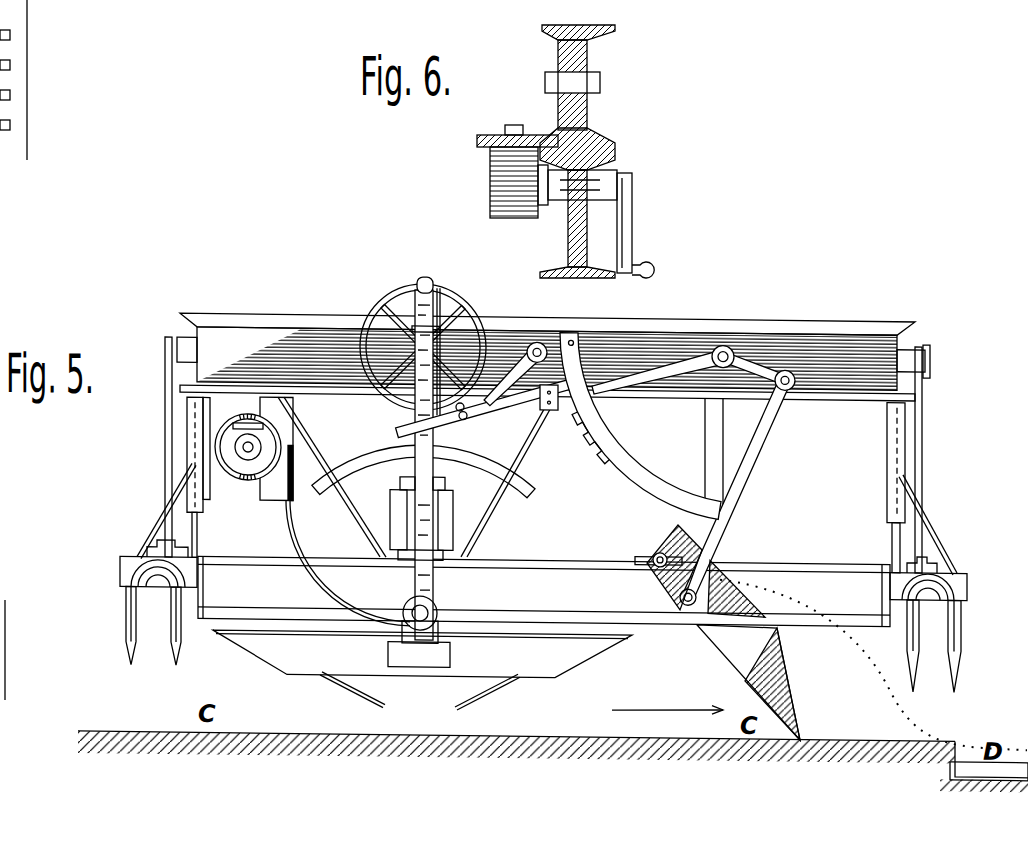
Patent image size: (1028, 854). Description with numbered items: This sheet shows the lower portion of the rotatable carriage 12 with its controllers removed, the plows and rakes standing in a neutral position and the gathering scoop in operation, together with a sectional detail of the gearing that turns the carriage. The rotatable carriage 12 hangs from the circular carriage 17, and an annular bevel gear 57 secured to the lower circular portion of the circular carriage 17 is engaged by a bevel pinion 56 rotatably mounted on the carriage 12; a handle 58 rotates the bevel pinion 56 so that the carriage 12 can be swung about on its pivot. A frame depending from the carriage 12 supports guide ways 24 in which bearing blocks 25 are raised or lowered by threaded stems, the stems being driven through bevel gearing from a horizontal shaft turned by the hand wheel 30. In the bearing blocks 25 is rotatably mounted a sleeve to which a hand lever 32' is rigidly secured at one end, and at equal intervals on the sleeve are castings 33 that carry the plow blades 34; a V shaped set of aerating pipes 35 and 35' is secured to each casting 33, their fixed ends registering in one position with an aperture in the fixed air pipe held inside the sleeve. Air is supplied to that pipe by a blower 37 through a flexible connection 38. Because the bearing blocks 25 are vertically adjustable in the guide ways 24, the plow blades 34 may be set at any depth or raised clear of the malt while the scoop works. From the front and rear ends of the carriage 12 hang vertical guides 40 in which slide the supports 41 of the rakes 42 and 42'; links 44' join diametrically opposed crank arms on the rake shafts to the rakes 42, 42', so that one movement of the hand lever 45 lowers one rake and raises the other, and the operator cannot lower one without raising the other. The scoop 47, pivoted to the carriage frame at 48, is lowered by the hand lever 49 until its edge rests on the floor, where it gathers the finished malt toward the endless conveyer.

In FIG. 6, the rotatable carriage 12 is at (572, 238).
In FIG. 5, the rotatable carriage 12 is at (281, 324).
In FIG. 6, the circular carriage 17 is at (588, 120).
In FIG. 6, the annular bevel gear 57 is at (490, 157).
In FIG. 6, the bevel pinion 56 is at (503, 205).
In FIG. 6, the handle 58 is at (632, 238).
In FIG. 5, the handle 58 is at (546, 405).
In FIG. 5, the hand wheel 30 is at (385, 293).
In FIG. 5, the hand lever 32' is at (459, 447).
In FIG. 5, the hand lever 49 is at (396, 425).
In FIG. 5, the bearing blocks 25 is at (400, 476).
In FIG. 5, the guide ways 24 is at (455, 512).
In FIG. 5, the flexible connection 38 is at (277, 527).
In FIG. 5, the blower 37 is at (258, 485).
In FIG. 5, the supports 41 is at (168, 530).
In FIG. 5, the vertical guides 40 is at (186, 468).
In FIG. 5, the links 44' is at (544, 455).
In FIG. 5, the rake 42 is at (137, 602).
In FIG. 5, the rake 42' is at (955, 625).
In FIG. 5, the hand lever 45 is at (930, 354).
In FIG. 5, the pivot 48 is at (658, 549).
In FIG. 5, the scoop 47 is at (765, 663).
In FIG. 5, the castings 33 is at (388, 645).
In FIG. 5, the plow blades 34 is at (422, 654).
In FIG. 5, the aerating pipe 35 is at (349, 696).
In FIG. 5, the aerating pipe 35' is at (501, 696).